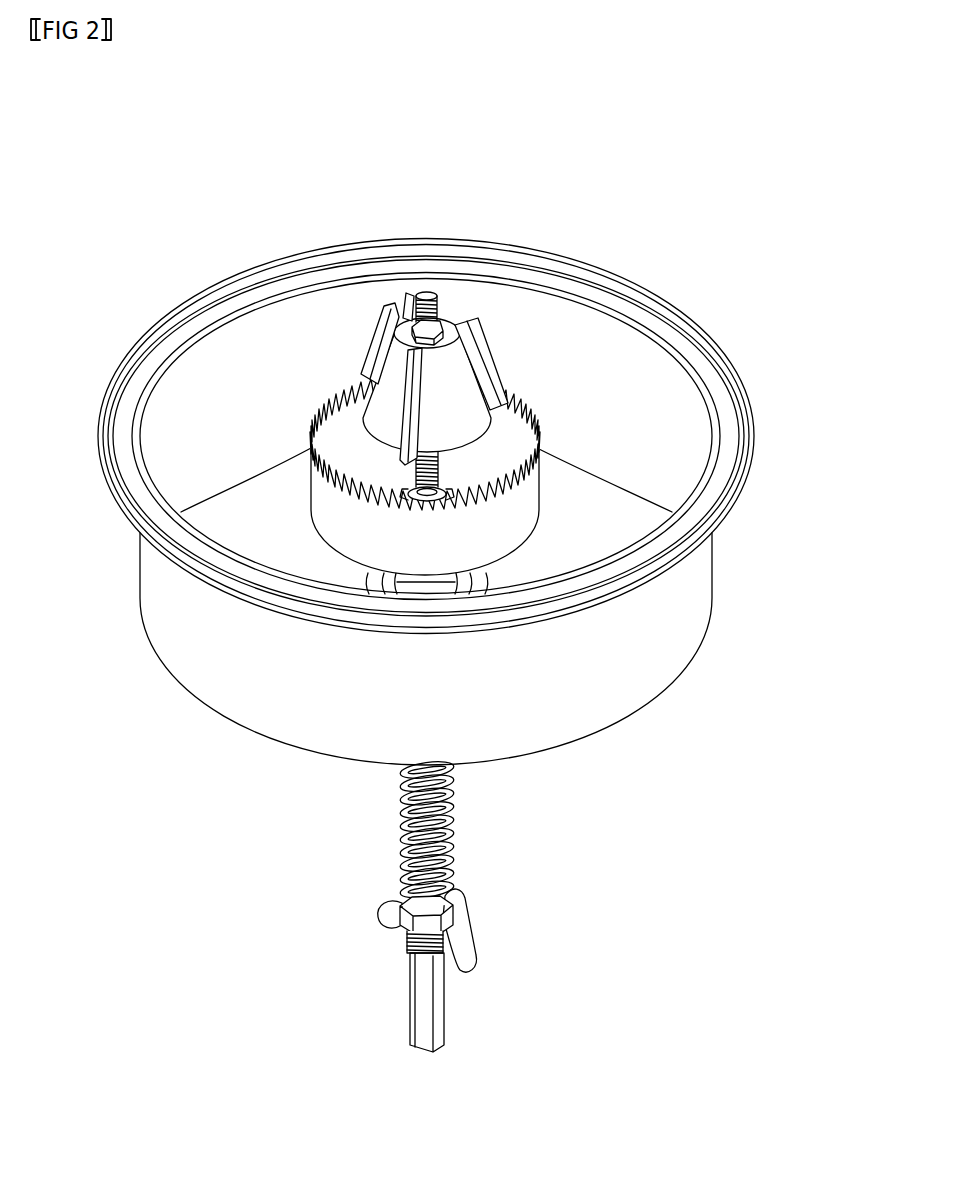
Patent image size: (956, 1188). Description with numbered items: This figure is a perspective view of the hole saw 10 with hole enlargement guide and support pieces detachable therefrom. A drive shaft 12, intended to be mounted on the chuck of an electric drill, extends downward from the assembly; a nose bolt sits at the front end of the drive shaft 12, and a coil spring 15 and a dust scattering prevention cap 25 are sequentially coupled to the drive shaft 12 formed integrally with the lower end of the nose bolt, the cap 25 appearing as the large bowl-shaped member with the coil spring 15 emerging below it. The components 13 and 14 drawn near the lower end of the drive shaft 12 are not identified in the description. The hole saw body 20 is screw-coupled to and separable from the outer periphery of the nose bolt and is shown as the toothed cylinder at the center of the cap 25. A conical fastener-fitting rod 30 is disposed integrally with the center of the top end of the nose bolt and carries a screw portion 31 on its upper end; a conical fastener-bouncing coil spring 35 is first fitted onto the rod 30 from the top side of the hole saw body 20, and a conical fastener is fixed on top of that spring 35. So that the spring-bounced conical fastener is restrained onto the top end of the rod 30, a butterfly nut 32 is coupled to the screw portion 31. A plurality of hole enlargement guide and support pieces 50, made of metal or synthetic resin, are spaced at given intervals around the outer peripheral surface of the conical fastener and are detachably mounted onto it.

The hole saw 10 is at (467, 575).
The drive shaft 12 is at (452, 799).
The threaded end of shaft 13 is at (402, 938).
The wing nut 14 is at (384, 916).
The coil spring 15 is at (398, 828).
The hole saw body 20 is at (523, 507).
The dust scattering prevention cap 25 is at (280, 710).
The conical fastener-fitting rod 30 is at (531, 408).
The screw portion 31 is at (440, 305).
The butterfly nut 32 is at (408, 302).
The conical fastener-bouncing coil spring 35 is at (400, 468).
The hole enlargement guide and support pieces 50 is at (380, 351).